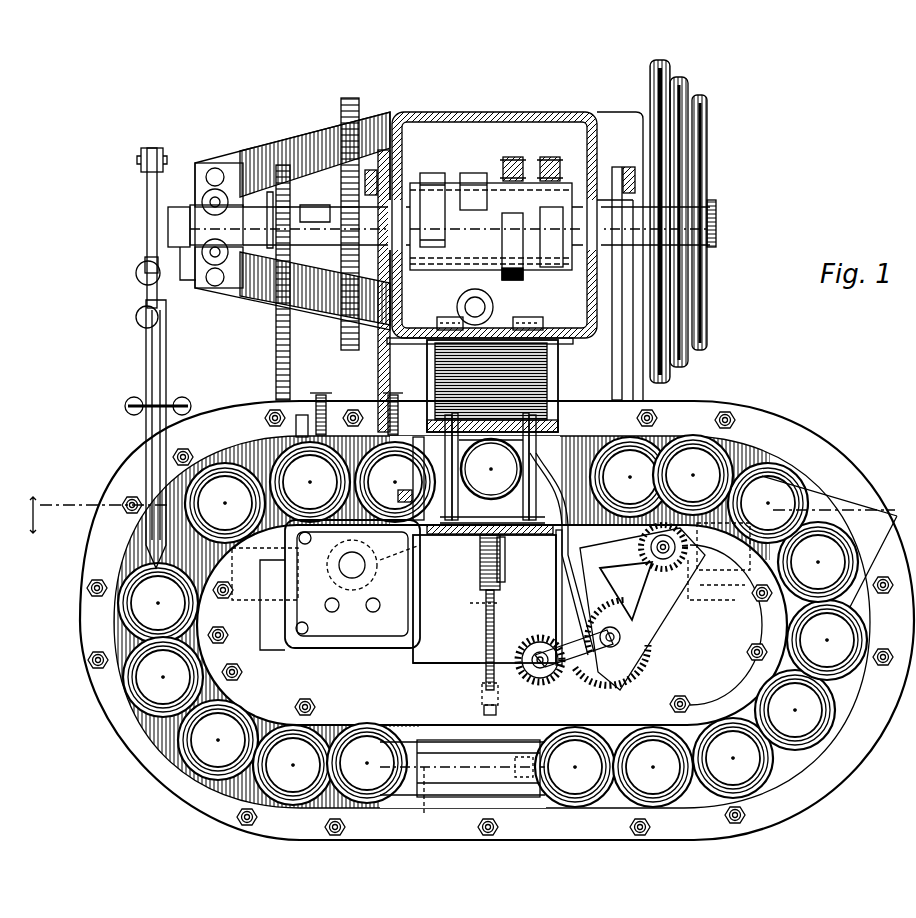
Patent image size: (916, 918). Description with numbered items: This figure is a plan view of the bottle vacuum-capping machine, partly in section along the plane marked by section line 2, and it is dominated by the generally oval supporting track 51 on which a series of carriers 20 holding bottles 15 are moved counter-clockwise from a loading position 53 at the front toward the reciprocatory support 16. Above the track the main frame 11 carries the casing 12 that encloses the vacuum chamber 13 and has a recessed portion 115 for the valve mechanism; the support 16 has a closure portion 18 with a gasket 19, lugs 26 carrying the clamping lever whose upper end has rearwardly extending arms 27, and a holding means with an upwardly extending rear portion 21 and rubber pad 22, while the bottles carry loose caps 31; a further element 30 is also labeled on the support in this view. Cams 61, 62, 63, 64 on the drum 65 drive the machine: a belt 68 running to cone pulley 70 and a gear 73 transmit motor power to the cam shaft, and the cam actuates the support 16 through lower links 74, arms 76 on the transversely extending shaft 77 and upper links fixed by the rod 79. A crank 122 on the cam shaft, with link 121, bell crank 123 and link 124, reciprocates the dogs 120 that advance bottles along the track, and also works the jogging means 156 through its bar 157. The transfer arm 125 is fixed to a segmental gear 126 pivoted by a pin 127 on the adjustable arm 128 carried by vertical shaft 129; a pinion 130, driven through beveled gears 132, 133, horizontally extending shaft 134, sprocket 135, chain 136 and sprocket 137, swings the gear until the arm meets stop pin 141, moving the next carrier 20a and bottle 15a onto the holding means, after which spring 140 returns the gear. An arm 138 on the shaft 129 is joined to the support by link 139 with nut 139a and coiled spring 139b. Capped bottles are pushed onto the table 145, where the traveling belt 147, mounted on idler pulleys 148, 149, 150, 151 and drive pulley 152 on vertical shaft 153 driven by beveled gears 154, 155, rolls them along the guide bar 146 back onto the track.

The section line 2— 2 is at (462, 541).
The main frame 11 is at (572, 112).
The casing 12 is at (583, 330).
The vacuum chamber 13 is at (503, 318).
The bottles 15 is at (768, 468).
The bottle 15a is at (640, 447).
The reciprocatory support 16 is at (505, 566).
The closure portion 18 is at (478, 556).
The gasket 19 is at (465, 560).
The carriers 20 is at (516, 494).
The bottle carrier 20a is at (698, 443).
The rear portion 21 is at (558, 409).
The rubber pad 22 is at (558, 426).
The lugs 26 is at (478, 523).
The rearwardly extending arms 27 is at (452, 500).
The coil 30 is at (432, 418).
The caps 31 is at (782, 493).
The supporting track 51 is at (150, 556).
The loading position 53 is at (497, 620).
The cam 61 is at (432, 248).
The cam 62 is at (480, 210).
The cam 63 is at (512, 280).
The cam 64 is at (548, 245).
The drum 65 is at (404, 186).
The belt 68 is at (657, 194).
The cone pulley 70 is at (695, 157).
The gear 73 is at (341, 112).
The lower links 74 is at (378, 373).
The arms 76 is at (371, 170).
The transversely extending shaft 77 is at (445, 488).
The rod 79 is at (616, 332).
The recessed portion 115 is at (475, 299).
The dogs 120 is at (538, 740).
The link 121 is at (146, 442).
The crank 122 is at (184, 228).
The bell crank 123 is at (196, 680).
The link 124 is at (460, 826).
The transfer arm 125 is at (540, 473).
The segmental gear 126 is at (640, 612).
The pin 127 is at (645, 646).
The adjustable arm 128 is at (566, 668).
The vertical shaft 129 is at (560, 683).
The pinion 130 is at (690, 600).
The beveled gear 132 is at (705, 596).
The beveled gear 133 is at (735, 590).
The horizontally extending shaft 134 is at (626, 591).
The sprocket 135 is at (265, 581).
The chain 136 is at (276, 355).
The sprocket 137 is at (288, 256).
The arm 138 is at (499, 707).
The link 139 is at (484, 642).
The nut 139a is at (473, 697).
The coiled spring 139b is at (477, 605).
The spring 140 is at (640, 662).
The stop pin 141 is at (557, 614).
The table 145 is at (326, 395).
The guide bar 146 is at (302, 415).
The traveling belt 147 is at (395, 482).
The idler pulley 148 is at (310, 482).
The idler pulley 149 is at (412, 500).
The idler pulley 150 is at (420, 665).
The idler pulley 151 is at (282, 652).
The drive pulley 152 is at (352, 584).
The vertical shaft 153 is at (352, 565).
The beveled gear 154 is at (333, 583).
The beveled gear 155 is at (388, 592).
The jogging means 156 is at (170, 340).
The bar 157 is at (158, 497).